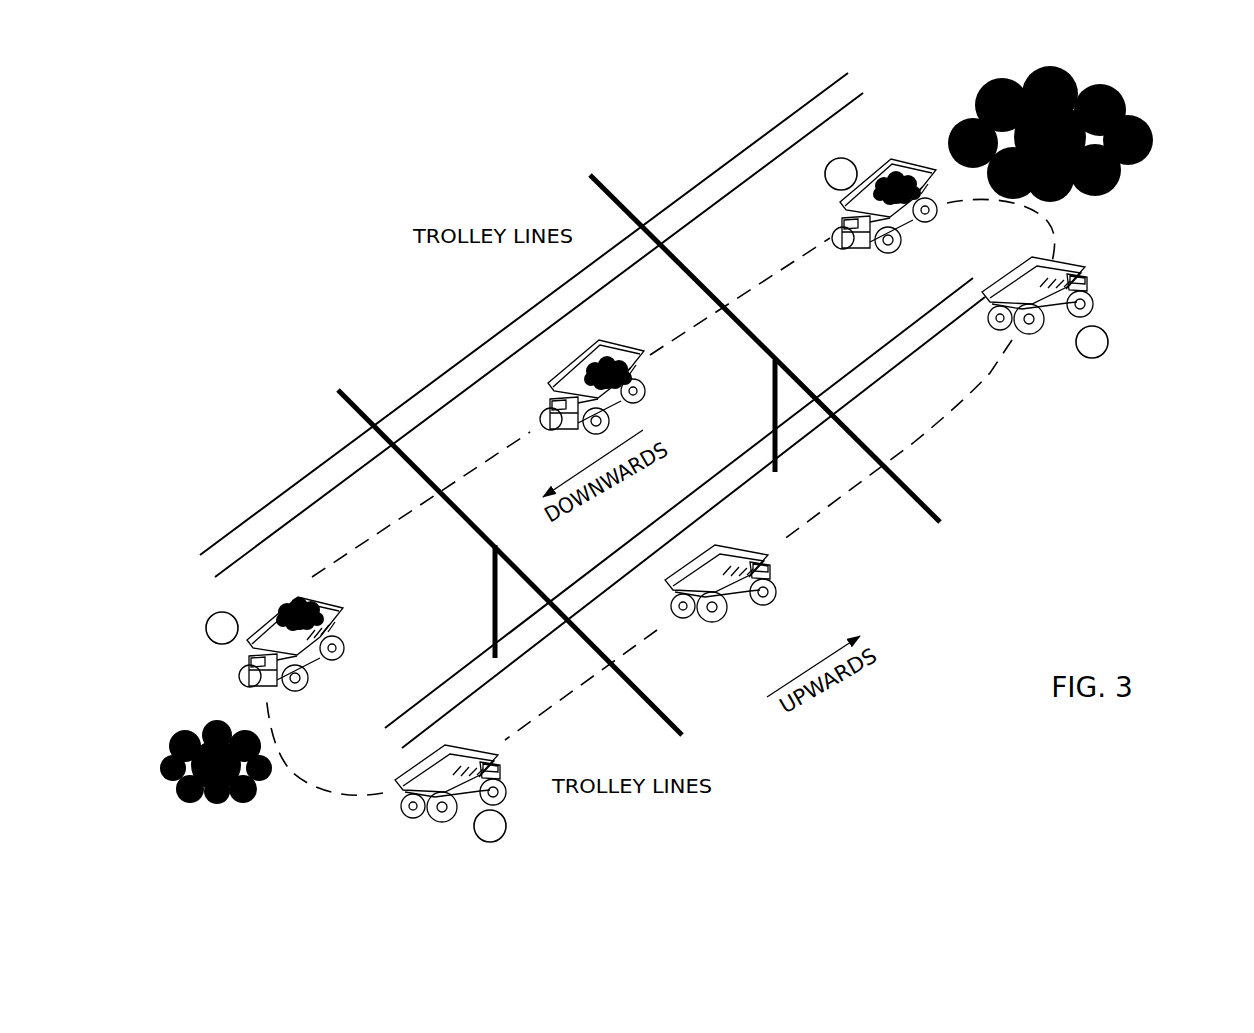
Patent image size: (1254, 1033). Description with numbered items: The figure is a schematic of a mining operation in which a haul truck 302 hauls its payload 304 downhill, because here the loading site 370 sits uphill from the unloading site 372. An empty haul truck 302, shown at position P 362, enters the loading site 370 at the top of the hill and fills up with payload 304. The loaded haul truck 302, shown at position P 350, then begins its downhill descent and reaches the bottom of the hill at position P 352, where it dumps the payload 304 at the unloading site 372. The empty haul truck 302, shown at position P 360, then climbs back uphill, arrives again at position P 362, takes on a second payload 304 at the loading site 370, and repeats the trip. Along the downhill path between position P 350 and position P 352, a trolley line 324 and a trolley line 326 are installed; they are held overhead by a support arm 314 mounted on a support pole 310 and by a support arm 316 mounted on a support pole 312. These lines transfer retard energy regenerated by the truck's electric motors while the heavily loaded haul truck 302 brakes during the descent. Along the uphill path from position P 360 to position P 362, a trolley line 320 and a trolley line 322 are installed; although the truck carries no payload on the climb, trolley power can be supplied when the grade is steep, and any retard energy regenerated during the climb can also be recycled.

The haul truck 302 is at (903, 248).
The payload 304 is at (893, 176).
The support pole 310 is at (495, 600).
The support pole 312 is at (775, 396).
The support arm 314 is at (472, 525).
The support arm 316 is at (748, 331).
The trolley line 320 is at (512, 670).
The trolley line 322 is at (537, 622).
The trolley line 324 is at (497, 333).
The trolley line 326 is at (553, 320).
The position P 350 is at (822, 174).
The position P 352 is at (203, 628).
The position P 360 is at (508, 826).
The position P 362 is at (1112, 342).
The loading site 370 is at (1086, 139).
The unloading site 372 is at (211, 788).